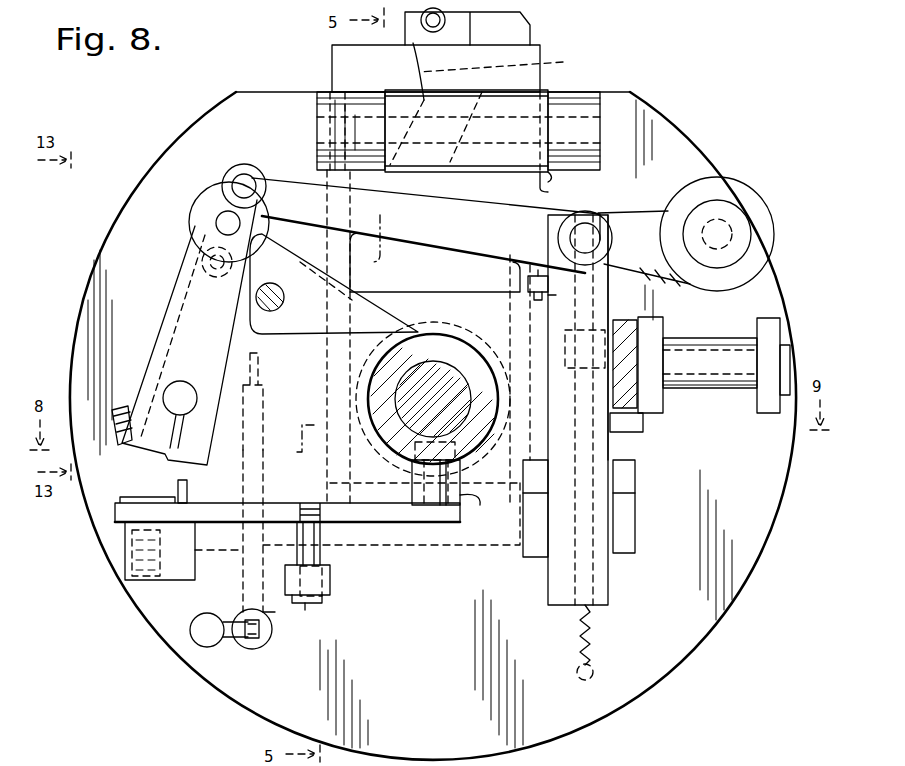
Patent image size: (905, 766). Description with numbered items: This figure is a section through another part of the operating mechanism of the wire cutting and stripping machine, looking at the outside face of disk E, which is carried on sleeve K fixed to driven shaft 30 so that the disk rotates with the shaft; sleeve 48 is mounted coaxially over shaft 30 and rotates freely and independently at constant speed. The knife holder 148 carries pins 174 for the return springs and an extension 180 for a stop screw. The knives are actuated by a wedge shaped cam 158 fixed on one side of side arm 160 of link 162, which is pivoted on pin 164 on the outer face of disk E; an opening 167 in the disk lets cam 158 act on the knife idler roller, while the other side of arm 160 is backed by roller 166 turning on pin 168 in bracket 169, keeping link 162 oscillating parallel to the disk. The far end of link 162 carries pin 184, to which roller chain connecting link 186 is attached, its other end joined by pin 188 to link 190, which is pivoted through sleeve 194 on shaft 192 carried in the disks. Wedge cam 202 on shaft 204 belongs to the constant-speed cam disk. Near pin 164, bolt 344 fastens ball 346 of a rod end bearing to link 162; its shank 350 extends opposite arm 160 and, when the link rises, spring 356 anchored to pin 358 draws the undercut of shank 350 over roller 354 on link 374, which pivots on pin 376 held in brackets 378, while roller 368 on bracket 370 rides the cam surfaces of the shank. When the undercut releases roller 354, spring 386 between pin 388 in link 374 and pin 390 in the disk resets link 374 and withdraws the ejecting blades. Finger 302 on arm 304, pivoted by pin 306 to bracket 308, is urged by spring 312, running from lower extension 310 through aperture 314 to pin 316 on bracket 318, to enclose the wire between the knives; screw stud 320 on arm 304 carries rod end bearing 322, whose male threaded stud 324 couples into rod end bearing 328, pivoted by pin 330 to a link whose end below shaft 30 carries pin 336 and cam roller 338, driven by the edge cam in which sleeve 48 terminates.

The disk E is at (722, 592).
The knife holder 148 is at (330, 73).
The pin 174 is at (416, 40).
The side arm 160 is at (482, 92).
The wedge shaped cam 158 is at (518, 67).
The roller 166 is at (390, 96).
The extension 180 is at (458, 120).
The pin 168 is at (555, 134).
The bracket 169 is at (552, 100).
The opening 167 is at (545, 176).
The link 162 is at (505, 215).
The bolt 344 is at (604, 212).
The ball 346 is at (610, 233).
The pin 164 is at (725, 228).
The pin 184 is at (265, 176).
The roller chain connecting link 186 is at (232, 180).
The sleeve 194 is at (152, 382).
The link 190 is at (195, 246).
The pin 188 is at (200, 266).
The shaft 192 is at (181, 382).
The wedge cam 202 is at (300, 228).
The shaft 204 is at (282, 306).
The finger 302 is at (258, 356).
The arm 304 is at (258, 434).
The sleeve 48 is at (450, 308).
The driven shaft 30 is at (445, 399).
The sleeve K is at (358, 372).
The spring 356 is at (527, 283).
The pin 358 is at (552, 294).
The roller 354 is at (585, 318).
The shank 350 is at (548, 612).
The pin 388 is at (585, 349).
The link 374 is at (665, 323).
The bracket 378 is at (660, 415).
The pin 376 is at (790, 362).
The roller 368 is at (625, 495).
The bracket 370 is at (535, 558).
The spring 386 is at (620, 635).
The pin 390 is at (578, 678).
The screw stud 320 is at (288, 545).
The pin 306 is at (176, 490).
The bracket 308 is at (228, 555).
The pin 330 is at (322, 545).
The male threaded stud 324 is at (330, 584).
The rod end bearing 328 is at (332, 592).
The rod end bearing 322 is at (320, 606).
The lower extension 310 is at (276, 613).
The bracket 318 is at (190, 638).
The pin 316 is at (235, 650).
The aperture 314 is at (262, 650).
The spring 312 is at (252, 640).
The pin 336 is at (420, 506).
The cam roller 338 is at (480, 506).